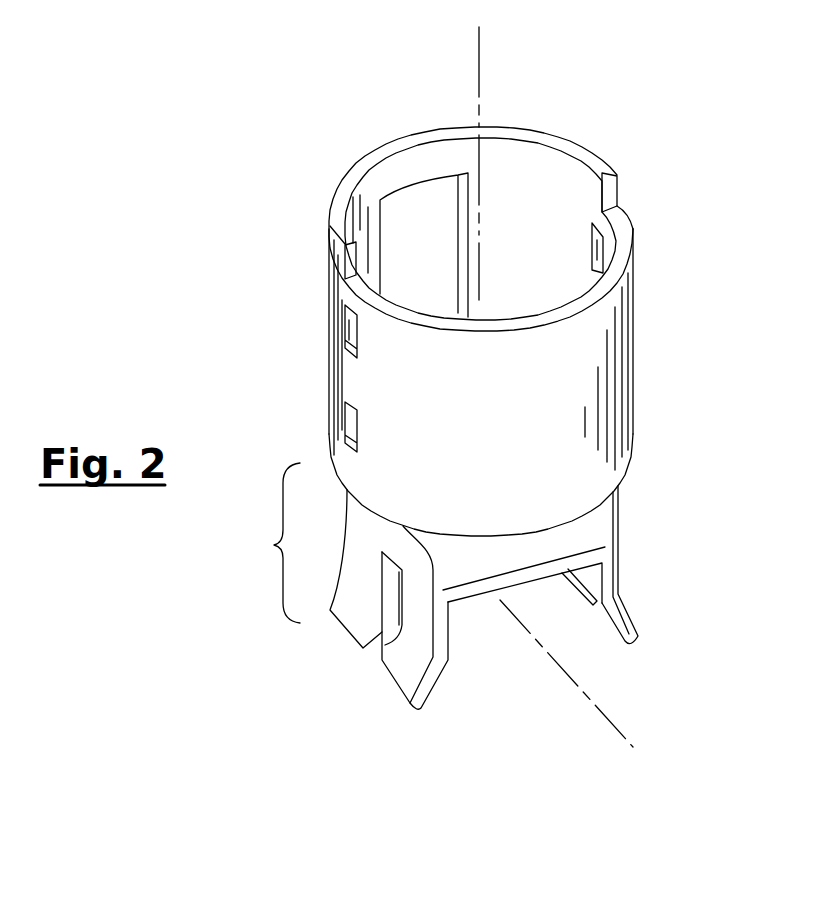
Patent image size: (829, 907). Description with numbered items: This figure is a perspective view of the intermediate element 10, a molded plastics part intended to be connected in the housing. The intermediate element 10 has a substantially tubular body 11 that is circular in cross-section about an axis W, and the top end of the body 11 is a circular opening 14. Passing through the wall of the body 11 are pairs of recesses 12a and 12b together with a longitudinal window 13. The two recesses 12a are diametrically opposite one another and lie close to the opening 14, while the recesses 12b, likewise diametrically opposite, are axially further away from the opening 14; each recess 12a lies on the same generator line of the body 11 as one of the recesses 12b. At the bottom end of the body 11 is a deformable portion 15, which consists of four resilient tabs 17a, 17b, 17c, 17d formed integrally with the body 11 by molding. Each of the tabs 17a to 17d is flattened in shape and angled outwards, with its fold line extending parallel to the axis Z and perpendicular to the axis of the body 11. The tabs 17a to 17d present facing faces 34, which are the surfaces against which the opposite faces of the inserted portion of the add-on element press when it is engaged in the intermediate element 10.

The intermediate element 10 is at (318, 165).
The tubular body 11 is at (375, 379).
The recesses 12a is at (348, 330).
The recesses 12b is at (345, 430).
The longitudinal window 13 is at (408, 202).
The circular opening 14 is at (437, 249).
The deformable portion 15 is at (484, 589).
The resilient tab 17a is at (403, 668).
The resilient tab 17b is at (358, 618).
The resilient tab 17c is at (638, 630).
The resilient tab 17d is at (565, 572).
The facing faces 34 is at (449, 630).
The axis W is at (478, 63).
The axis Z is at (602, 712).